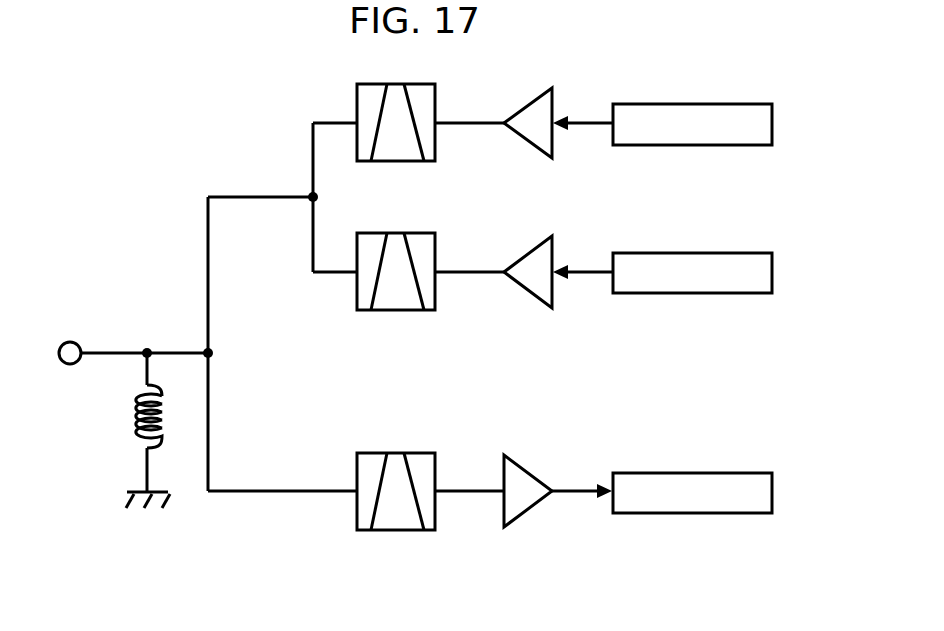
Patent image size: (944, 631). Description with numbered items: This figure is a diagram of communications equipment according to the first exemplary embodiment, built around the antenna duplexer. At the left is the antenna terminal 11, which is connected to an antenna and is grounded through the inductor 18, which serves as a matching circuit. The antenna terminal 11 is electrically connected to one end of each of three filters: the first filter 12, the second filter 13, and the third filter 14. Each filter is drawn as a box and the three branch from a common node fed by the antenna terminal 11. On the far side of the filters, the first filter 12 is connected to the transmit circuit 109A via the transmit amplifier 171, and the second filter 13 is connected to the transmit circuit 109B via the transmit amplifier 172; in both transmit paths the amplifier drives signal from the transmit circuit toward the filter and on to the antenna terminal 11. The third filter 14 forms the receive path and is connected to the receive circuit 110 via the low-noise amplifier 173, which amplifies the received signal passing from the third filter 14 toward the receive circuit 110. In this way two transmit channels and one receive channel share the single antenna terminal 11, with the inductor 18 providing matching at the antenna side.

The antenna terminal 11 is at (65, 339).
The inductor 18 is at (122, 425).
The first filter 12 is at (437, 138).
The second filter 13 is at (437, 288).
The third filter 14 is at (437, 522).
The transmit amplifier 171 is at (552, 148).
The transmit amplifier 172 is at (552, 298).
The low-noise amplifier 173 is at (527, 512).
The transmit circuit 109A is at (773, 127).
The transmit circuit 109B is at (773, 276).
The receive circuit 110 is at (773, 496).